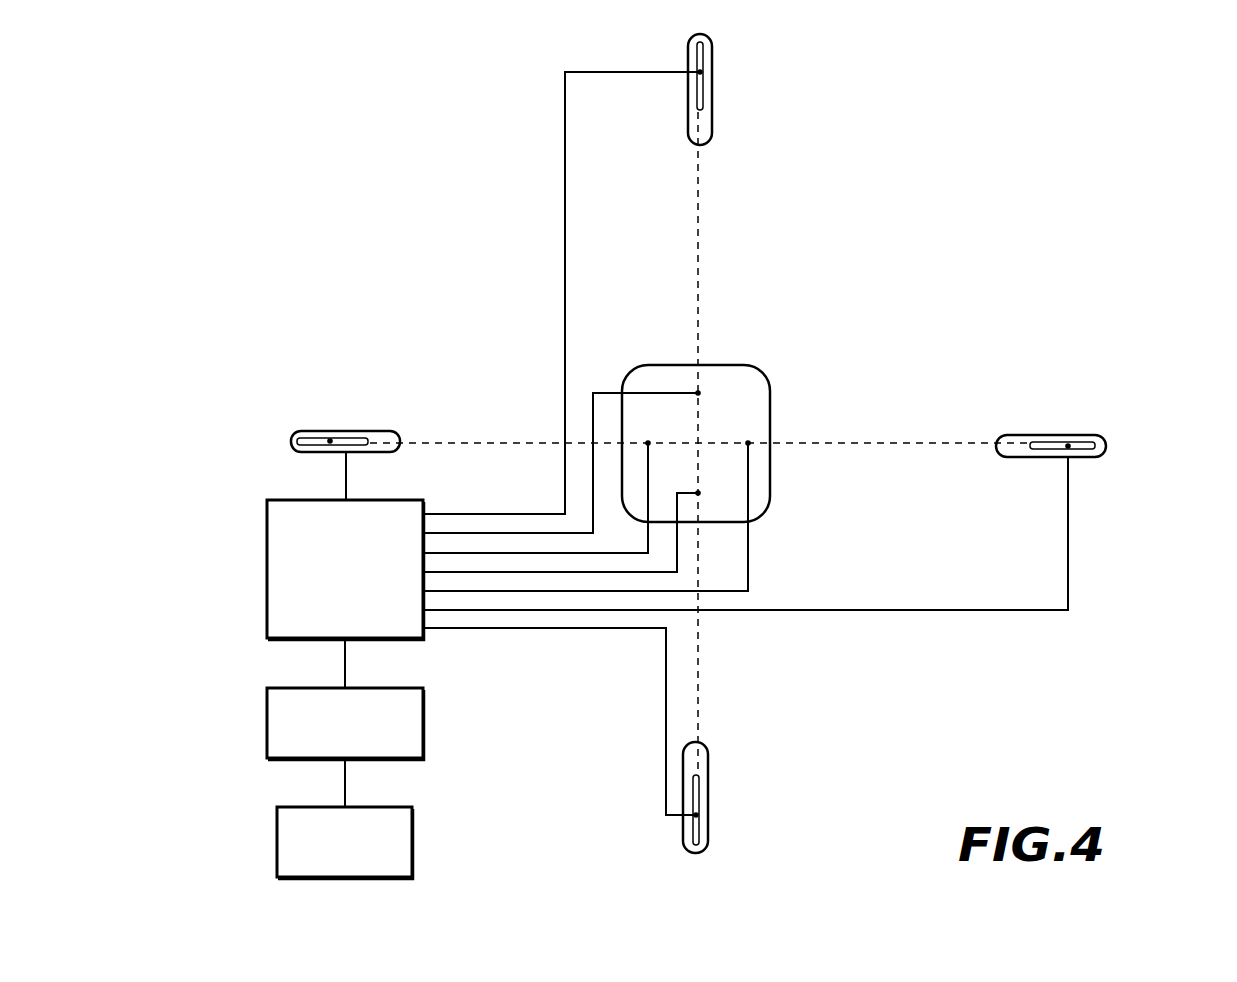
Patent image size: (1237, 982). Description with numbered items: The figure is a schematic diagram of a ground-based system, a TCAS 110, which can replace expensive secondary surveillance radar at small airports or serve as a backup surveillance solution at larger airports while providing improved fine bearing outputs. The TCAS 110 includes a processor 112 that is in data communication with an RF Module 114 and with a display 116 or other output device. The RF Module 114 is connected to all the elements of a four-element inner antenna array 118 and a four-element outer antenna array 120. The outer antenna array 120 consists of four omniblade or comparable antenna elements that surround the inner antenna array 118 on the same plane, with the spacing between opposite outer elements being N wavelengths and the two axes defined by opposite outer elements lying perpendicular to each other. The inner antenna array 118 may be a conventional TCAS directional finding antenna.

The TCAS 110 is at (996, 139).
The processor 112 is at (423, 710).
The RF Module 114 is at (423, 500).
The display 116 is at (412, 832).
The inner antenna array 118 is at (748, 365).
The outer antenna array 120 is at (692, 143).